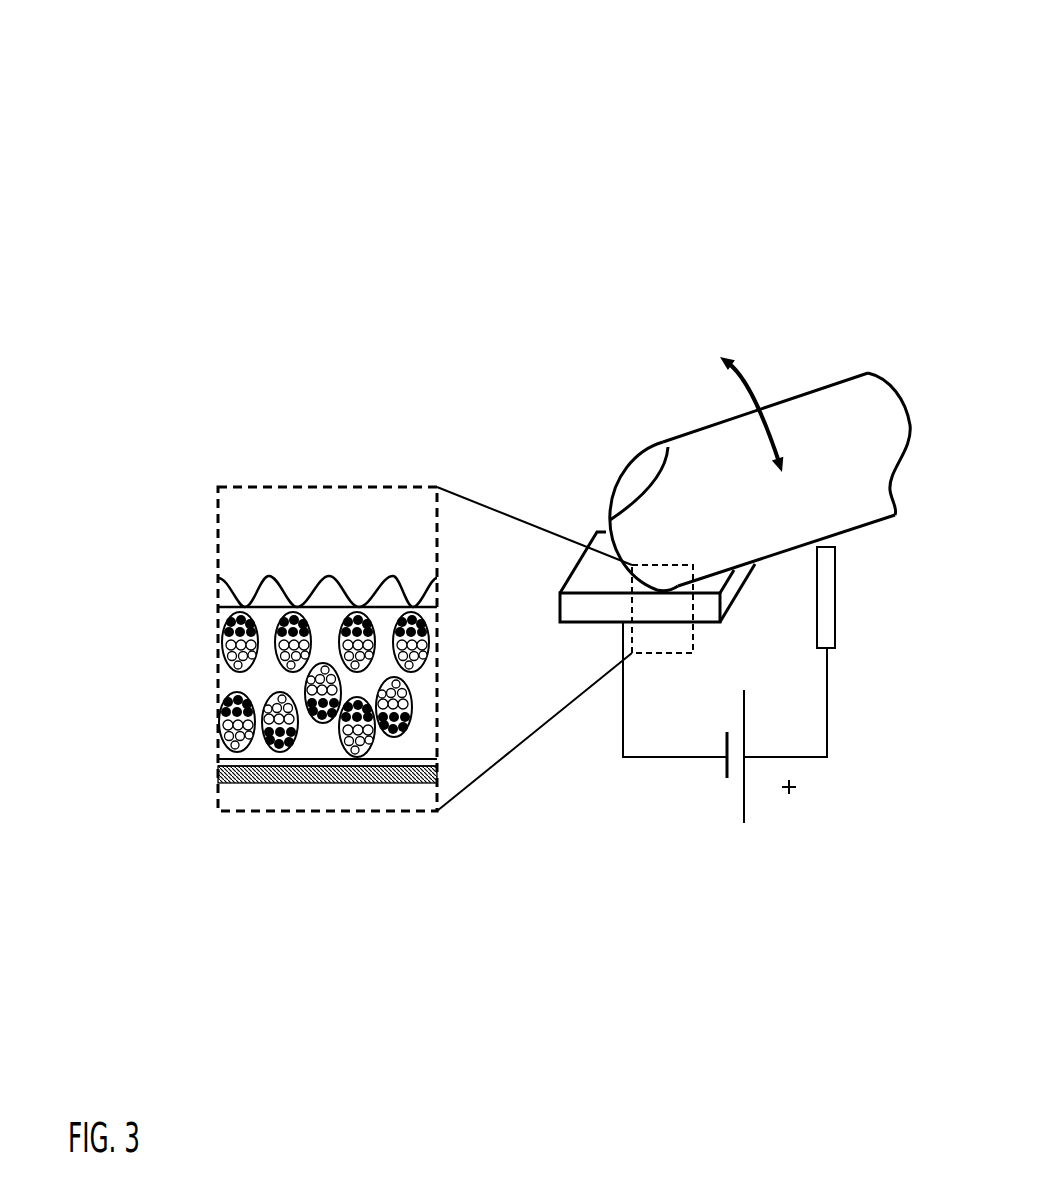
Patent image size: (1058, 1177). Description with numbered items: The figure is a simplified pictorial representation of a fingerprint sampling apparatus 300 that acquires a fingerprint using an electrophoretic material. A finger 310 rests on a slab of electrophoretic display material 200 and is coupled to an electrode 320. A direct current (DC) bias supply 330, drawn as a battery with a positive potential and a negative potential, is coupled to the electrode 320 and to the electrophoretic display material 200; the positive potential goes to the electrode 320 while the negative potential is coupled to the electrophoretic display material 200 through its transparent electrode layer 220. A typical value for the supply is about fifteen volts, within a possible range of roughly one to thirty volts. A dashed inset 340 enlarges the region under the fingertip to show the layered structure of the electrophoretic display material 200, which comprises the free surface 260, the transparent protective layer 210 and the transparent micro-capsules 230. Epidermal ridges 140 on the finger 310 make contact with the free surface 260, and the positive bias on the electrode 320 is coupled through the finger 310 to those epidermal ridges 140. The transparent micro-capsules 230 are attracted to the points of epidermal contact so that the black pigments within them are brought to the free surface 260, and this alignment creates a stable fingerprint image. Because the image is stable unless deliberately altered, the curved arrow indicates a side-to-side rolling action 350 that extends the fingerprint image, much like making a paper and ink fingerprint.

The fingerprint sampling apparatus 300 is at (117, 172).
The side-to-side rolling action 350 is at (773, 390).
The finger 310 is at (870, 532).
The electrode 320 is at (835, 633).
The direct current (DC) bias supply 330 is at (755, 812).
The electrophoretic display material 200 is at (560, 622).
The inset 340 is at (437, 811).
The epidermal ridges 140 is at (298, 598).
The free surface 260 is at (216, 605).
The transparent micro-capsules 230 is at (218, 633).
The transparent electrode layer 220 is at (218, 767).
The transparent protective layer 210 is at (218, 785).